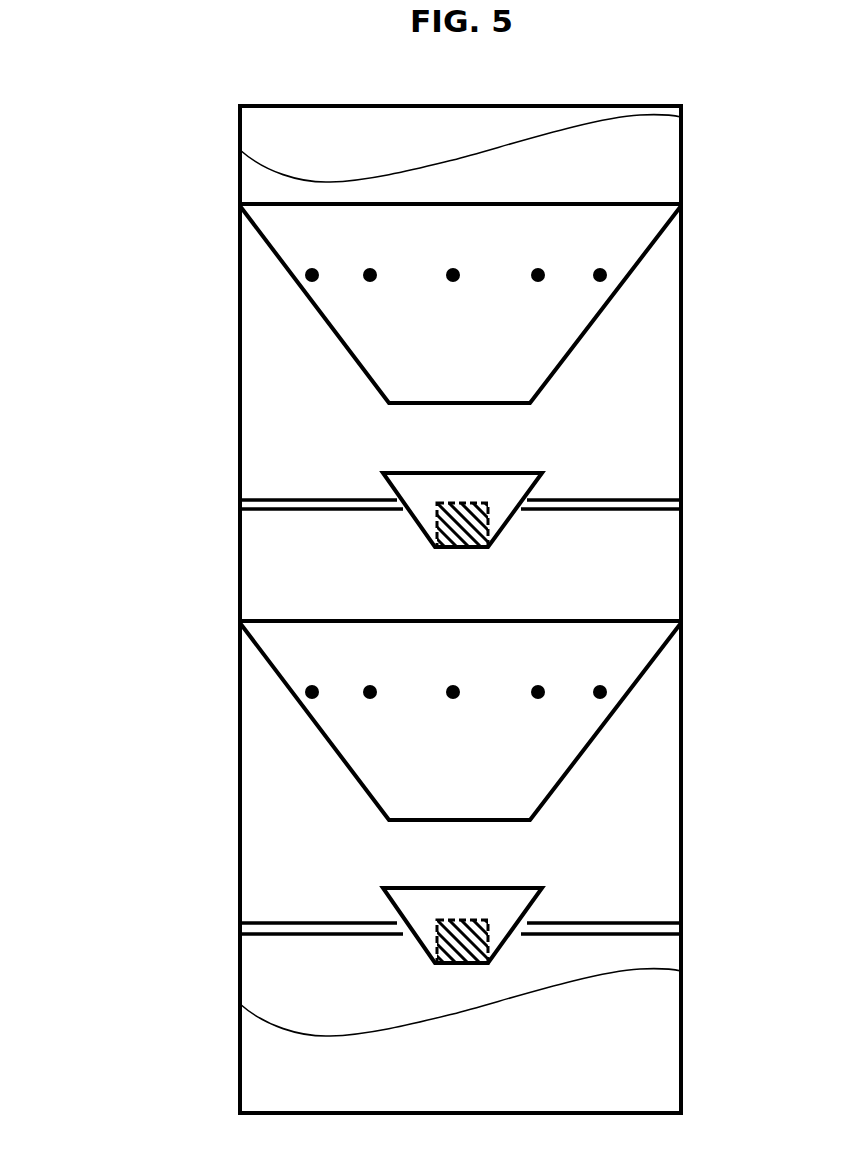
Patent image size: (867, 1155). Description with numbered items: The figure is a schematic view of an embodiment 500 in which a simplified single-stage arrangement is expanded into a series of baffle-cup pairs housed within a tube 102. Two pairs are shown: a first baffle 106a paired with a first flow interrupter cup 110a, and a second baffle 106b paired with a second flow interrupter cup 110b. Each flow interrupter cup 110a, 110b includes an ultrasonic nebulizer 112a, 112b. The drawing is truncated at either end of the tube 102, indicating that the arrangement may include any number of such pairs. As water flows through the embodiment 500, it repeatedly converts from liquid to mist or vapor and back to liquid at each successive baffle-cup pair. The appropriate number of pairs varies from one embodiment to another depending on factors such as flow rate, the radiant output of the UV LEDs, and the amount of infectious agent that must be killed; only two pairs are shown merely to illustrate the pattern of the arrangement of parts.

The embodiment 500 is at (188, 310).
The tube 102 is at (681, 304).
The baffle 106a is at (490, 361).
The baffle 106b is at (490, 793).
The flow interrupter cup 110a is at (510, 489).
The flow interrupter cup 110b is at (510, 904).
The ultrasonic nebulizer 112a is at (432, 538).
The ultrasonic nebulizer 112b is at (430, 952).